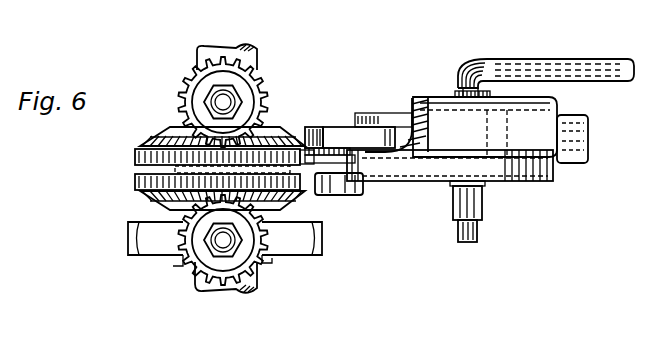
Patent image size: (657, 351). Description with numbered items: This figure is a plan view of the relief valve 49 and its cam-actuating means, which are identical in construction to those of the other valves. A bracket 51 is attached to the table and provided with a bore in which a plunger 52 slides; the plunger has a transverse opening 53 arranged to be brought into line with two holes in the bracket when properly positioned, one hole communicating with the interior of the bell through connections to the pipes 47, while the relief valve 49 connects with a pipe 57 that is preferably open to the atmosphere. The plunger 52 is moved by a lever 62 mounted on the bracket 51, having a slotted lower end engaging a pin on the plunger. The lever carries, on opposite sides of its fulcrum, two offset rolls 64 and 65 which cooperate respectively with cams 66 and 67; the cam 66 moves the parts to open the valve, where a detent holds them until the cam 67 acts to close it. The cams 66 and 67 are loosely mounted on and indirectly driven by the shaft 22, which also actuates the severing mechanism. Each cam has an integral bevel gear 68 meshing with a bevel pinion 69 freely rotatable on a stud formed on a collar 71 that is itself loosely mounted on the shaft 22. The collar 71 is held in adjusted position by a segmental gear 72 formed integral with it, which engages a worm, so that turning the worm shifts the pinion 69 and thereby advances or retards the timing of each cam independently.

The shaft 22 is at (258, 276).
The pipes 47 is at (478, 236).
The relief valve 49 is at (413, 108).
The bracket 51 is at (535, 182).
The plunger 52 is at (575, 163).
The transverse opening 53 is at (527, 168).
The pipe 57 is at (619, 64).
The lever 62 is at (337, 130).
The roll 64 is at (320, 140).
The roll 65 is at (357, 195).
The cam 66 is at (135, 156).
The cam 67 is at (135, 180).
The bevel gear 68 is at (157, 133).
The bevel pinion 69 is at (188, 95).
The collar 71 is at (275, 262).
The segmental gear 72 is at (128, 240).